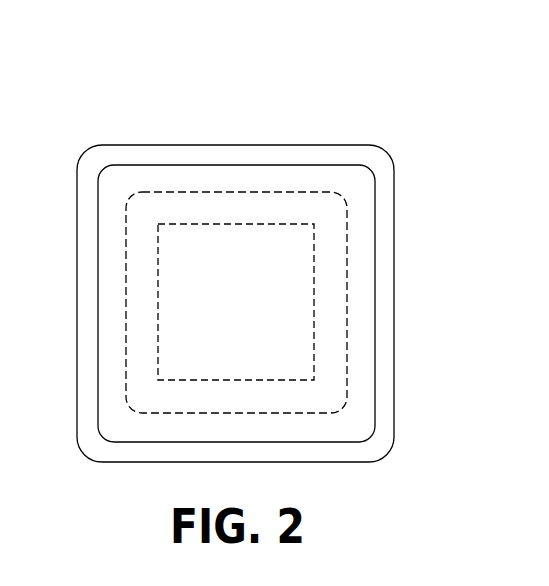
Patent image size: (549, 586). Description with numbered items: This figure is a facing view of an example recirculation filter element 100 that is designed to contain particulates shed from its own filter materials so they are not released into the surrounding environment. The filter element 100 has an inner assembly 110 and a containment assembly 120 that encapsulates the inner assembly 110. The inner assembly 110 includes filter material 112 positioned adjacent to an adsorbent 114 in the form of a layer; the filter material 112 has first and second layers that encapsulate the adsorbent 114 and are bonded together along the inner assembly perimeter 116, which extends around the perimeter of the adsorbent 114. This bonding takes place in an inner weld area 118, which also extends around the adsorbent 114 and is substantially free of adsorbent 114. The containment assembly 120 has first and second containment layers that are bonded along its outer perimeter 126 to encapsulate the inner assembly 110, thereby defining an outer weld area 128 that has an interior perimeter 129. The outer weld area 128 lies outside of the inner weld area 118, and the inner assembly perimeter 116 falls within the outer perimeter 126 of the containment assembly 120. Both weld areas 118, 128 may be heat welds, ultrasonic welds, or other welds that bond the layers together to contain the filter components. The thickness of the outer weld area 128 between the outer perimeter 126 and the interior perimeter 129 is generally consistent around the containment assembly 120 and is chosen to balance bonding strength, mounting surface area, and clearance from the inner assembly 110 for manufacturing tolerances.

The filter element 100 is at (177, 58).
The inner assembly 110 is at (350, 228).
The filter material 112 is at (327, 209).
The adsorbent 114 is at (280, 278).
The inner assembly perimeter 116 is at (225, 192).
The inner weld area 118 is at (195, 205).
The containment assembly 120 is at (397, 355).
The outer perimeter 126 is at (395, 383).
The outer weld area 128 is at (365, 445).
The interior perimeter 129 is at (98, 347).